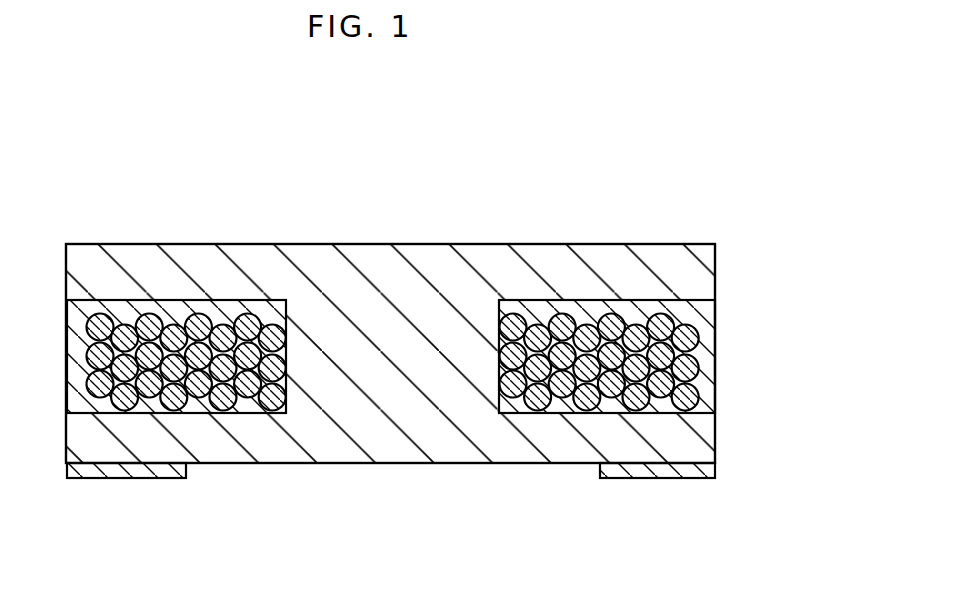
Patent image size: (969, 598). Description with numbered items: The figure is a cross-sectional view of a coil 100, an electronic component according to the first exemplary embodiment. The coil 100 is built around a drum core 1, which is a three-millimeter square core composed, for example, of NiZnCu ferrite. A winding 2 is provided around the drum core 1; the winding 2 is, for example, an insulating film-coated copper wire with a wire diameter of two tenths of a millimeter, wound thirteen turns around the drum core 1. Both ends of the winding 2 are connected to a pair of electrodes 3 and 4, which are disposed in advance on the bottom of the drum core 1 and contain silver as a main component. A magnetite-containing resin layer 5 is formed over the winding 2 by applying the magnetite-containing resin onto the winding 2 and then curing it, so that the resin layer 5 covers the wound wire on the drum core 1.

The coil 100 is at (58, 147).
The drum core 1 is at (398, 360).
The winding 2 is at (602, 322).
The electrode 3 is at (127, 473).
The electrode 4 is at (649, 473).
The magnetite-containing resin layer 5 is at (707, 327).